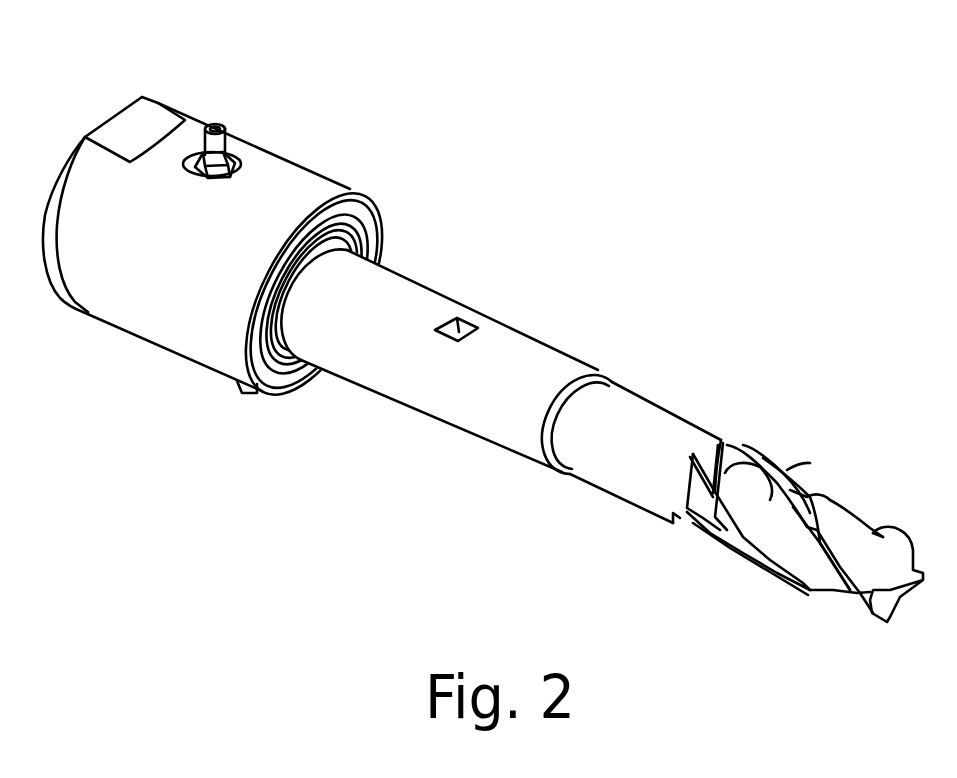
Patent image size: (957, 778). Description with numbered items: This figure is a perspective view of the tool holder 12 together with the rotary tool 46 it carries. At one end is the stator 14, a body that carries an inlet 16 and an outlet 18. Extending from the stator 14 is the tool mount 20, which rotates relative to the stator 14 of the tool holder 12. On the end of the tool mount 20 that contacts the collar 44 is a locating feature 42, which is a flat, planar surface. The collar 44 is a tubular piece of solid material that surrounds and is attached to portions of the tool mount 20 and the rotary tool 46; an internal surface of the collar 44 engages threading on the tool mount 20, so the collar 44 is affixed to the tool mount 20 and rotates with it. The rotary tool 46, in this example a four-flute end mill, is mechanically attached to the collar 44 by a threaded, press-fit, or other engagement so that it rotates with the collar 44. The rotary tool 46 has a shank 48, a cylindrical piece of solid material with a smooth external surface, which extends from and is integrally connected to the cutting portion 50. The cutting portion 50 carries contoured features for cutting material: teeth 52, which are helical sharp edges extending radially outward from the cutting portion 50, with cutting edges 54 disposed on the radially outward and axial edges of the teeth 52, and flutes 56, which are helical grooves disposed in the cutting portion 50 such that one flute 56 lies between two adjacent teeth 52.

The tool holder 12 is at (226, 255).
The stator 14 is at (167, 312).
The inlet 16 is at (240, 393).
The outlet 18 is at (215, 122).
The tool mount 20 is at (400, 410).
The locating feature 42 is at (457, 322).
The collar 44 is at (538, 341).
The rotary tool 46 is at (678, 408).
The shank 48 is at (662, 536).
The cutting portion 50 is at (798, 519).
The teeth 52 is at (845, 510).
The cutting edges 54 is at (882, 530).
The flutes 56 is at (788, 490).